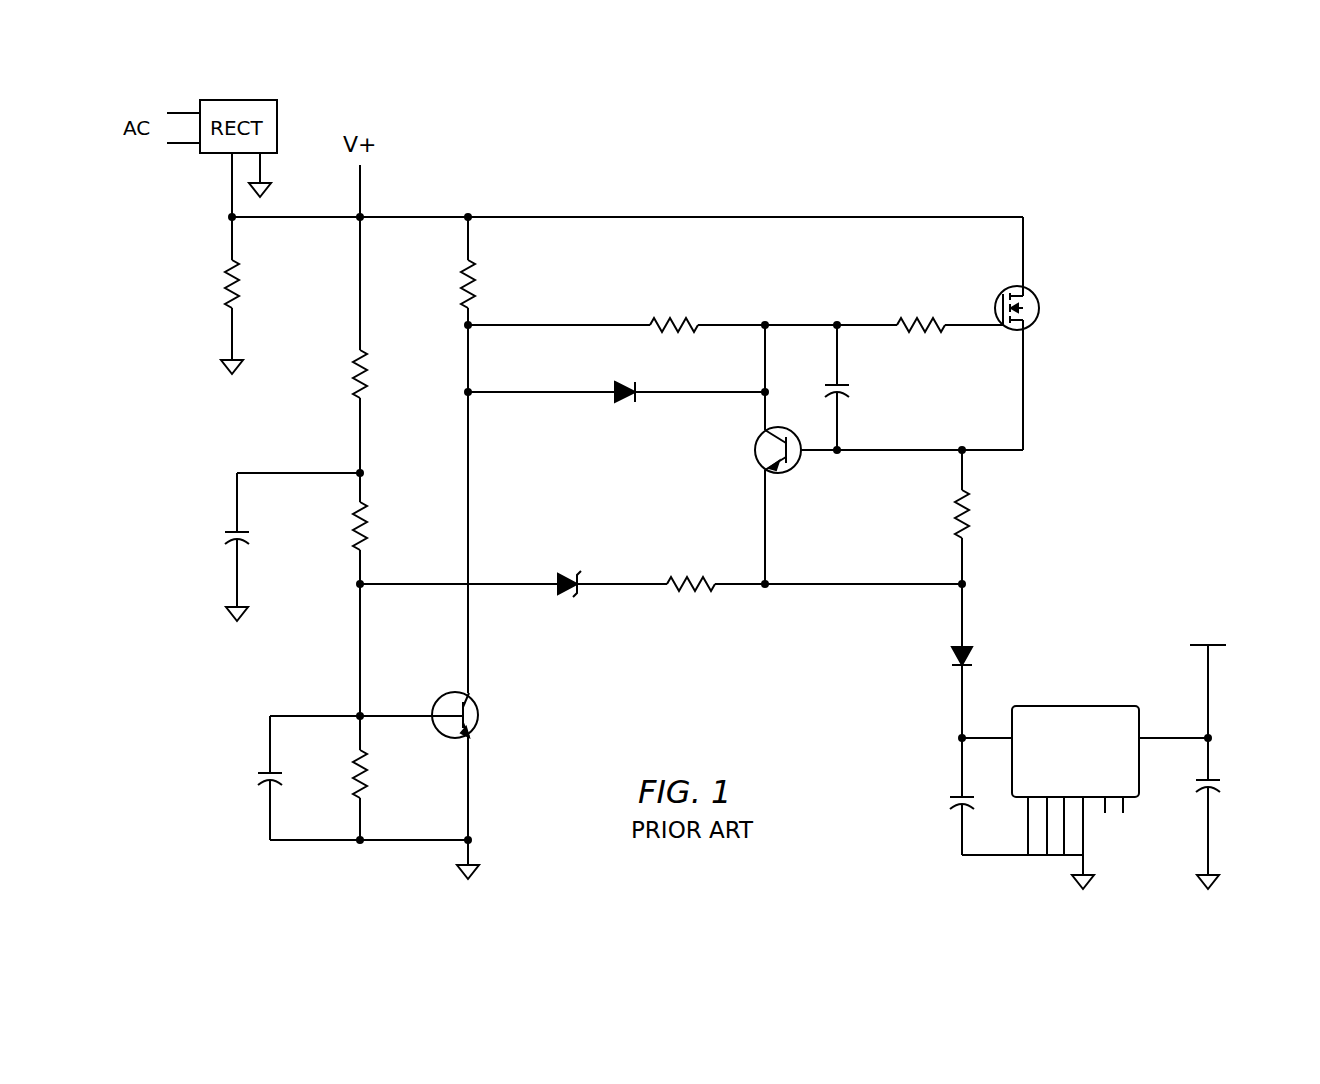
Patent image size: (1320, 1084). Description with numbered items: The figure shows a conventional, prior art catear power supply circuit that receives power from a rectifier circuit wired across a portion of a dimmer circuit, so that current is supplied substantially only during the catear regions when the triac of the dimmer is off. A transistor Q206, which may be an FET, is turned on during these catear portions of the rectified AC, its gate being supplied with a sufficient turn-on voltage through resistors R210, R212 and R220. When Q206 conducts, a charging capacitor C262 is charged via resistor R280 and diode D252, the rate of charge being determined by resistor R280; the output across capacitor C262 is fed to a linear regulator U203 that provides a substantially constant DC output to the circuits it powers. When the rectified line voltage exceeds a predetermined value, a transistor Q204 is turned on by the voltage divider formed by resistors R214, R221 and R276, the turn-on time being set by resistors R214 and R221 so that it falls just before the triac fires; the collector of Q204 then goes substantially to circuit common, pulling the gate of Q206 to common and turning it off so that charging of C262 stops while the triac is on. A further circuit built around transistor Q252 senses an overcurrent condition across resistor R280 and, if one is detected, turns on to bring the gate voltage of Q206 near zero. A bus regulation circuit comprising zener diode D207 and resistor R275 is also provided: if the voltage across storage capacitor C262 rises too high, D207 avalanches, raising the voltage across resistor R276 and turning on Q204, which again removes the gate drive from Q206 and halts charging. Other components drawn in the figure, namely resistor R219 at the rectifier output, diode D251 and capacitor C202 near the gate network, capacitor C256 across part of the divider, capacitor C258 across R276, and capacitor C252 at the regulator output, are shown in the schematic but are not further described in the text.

The resistor 100K R219 is at (261, 317).
The resistor R214 is at (390, 426).
The resistor R210 is at (473, 297).
The resistor R212 is at (697, 320).
The resistor R220 is at (930, 320).
The transistor Q206 is at (1040, 318).
The diode D251 is at (616, 405).
The transistor Q252 is at (752, 454).
The capacitor .022uF C202 is at (876, 387).
The resistor R280 is at (993, 548).
The zener diode D207 is at (572, 610).
The resistor R275 is at (693, 613).
The diode D252 is at (918, 684).
The capacitor 1000pF C256 is at (294, 545).
The resistor R221 is at (390, 623).
The transistor Q204 is at (418, 784).
The capacitor .01uF C258 is at (302, 778).
The resistor R276 is at (393, 793).
The linear regulator U203 is at (1085, 771).
The charging capacitor C262 is at (929, 796).
The capacitor 10uF C252 is at (1229, 754).